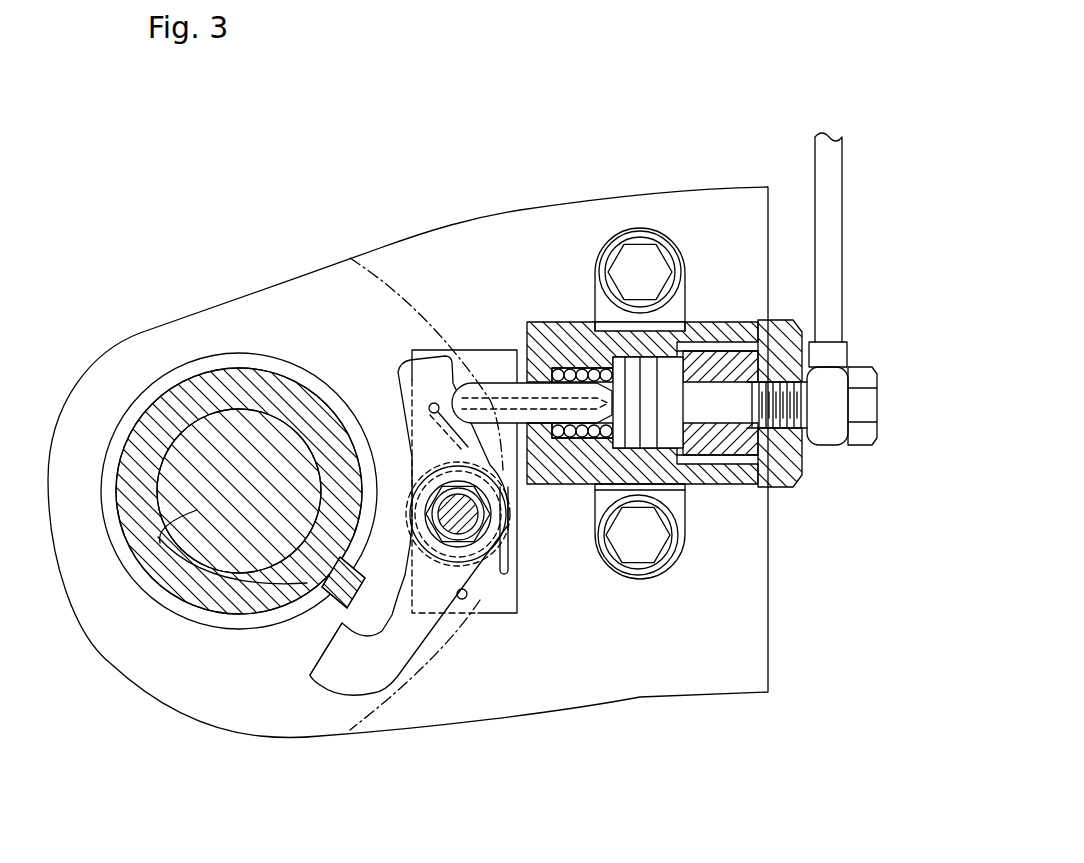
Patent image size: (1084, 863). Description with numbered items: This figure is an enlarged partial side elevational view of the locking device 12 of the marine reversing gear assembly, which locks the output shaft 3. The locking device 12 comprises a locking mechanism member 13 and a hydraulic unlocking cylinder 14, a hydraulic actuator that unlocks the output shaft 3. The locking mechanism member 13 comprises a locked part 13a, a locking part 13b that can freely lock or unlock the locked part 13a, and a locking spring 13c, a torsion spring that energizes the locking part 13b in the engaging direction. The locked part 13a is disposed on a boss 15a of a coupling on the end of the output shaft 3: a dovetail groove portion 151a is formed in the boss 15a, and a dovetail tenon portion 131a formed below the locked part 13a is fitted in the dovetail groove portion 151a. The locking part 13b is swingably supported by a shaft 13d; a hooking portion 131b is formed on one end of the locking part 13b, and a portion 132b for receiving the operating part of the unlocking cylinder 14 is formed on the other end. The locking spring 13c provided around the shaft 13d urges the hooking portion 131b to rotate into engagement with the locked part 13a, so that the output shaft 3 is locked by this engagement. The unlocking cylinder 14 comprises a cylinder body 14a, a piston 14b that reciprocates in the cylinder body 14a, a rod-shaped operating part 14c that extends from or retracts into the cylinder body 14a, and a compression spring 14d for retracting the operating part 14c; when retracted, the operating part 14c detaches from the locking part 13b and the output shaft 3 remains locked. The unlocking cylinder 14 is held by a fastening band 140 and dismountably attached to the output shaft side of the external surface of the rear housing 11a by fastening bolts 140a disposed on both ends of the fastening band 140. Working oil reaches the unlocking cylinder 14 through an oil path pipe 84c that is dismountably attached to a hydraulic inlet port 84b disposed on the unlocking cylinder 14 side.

The output shaft 3 is at (200, 503).
The rear housing 11a is at (403, 243).
The locking device 12 is at (640, 535).
The locking mechanism member 13 is at (403, 683).
The locked part 13a is at (360, 587).
The locking part 13b is at (452, 637).
The locking spring 13c is at (520, 560).
The shaft 13d is at (492, 527).
The hydraulic unlocking cylinder 14 is at (725, 486).
The cylinder body 14a is at (717, 320).
The piston 14b is at (683, 497).
The operating part 14c is at (498, 458).
The compression spring 14d is at (580, 368).
The boss 15a is at (192, 592).
The hydraulic inlet port 84b is at (745, 433).
The oil path pipe 84c is at (843, 226).
The dovetail tenon portion 131a is at (314, 598).
The hooking portion 131b is at (337, 653).
The portion for receiving an operating part 132b is at (460, 384).
The fastening band 140 is at (680, 547).
The fastening bolts 140a is at (643, 258).
The dovetail groove portion 151a is at (300, 588).